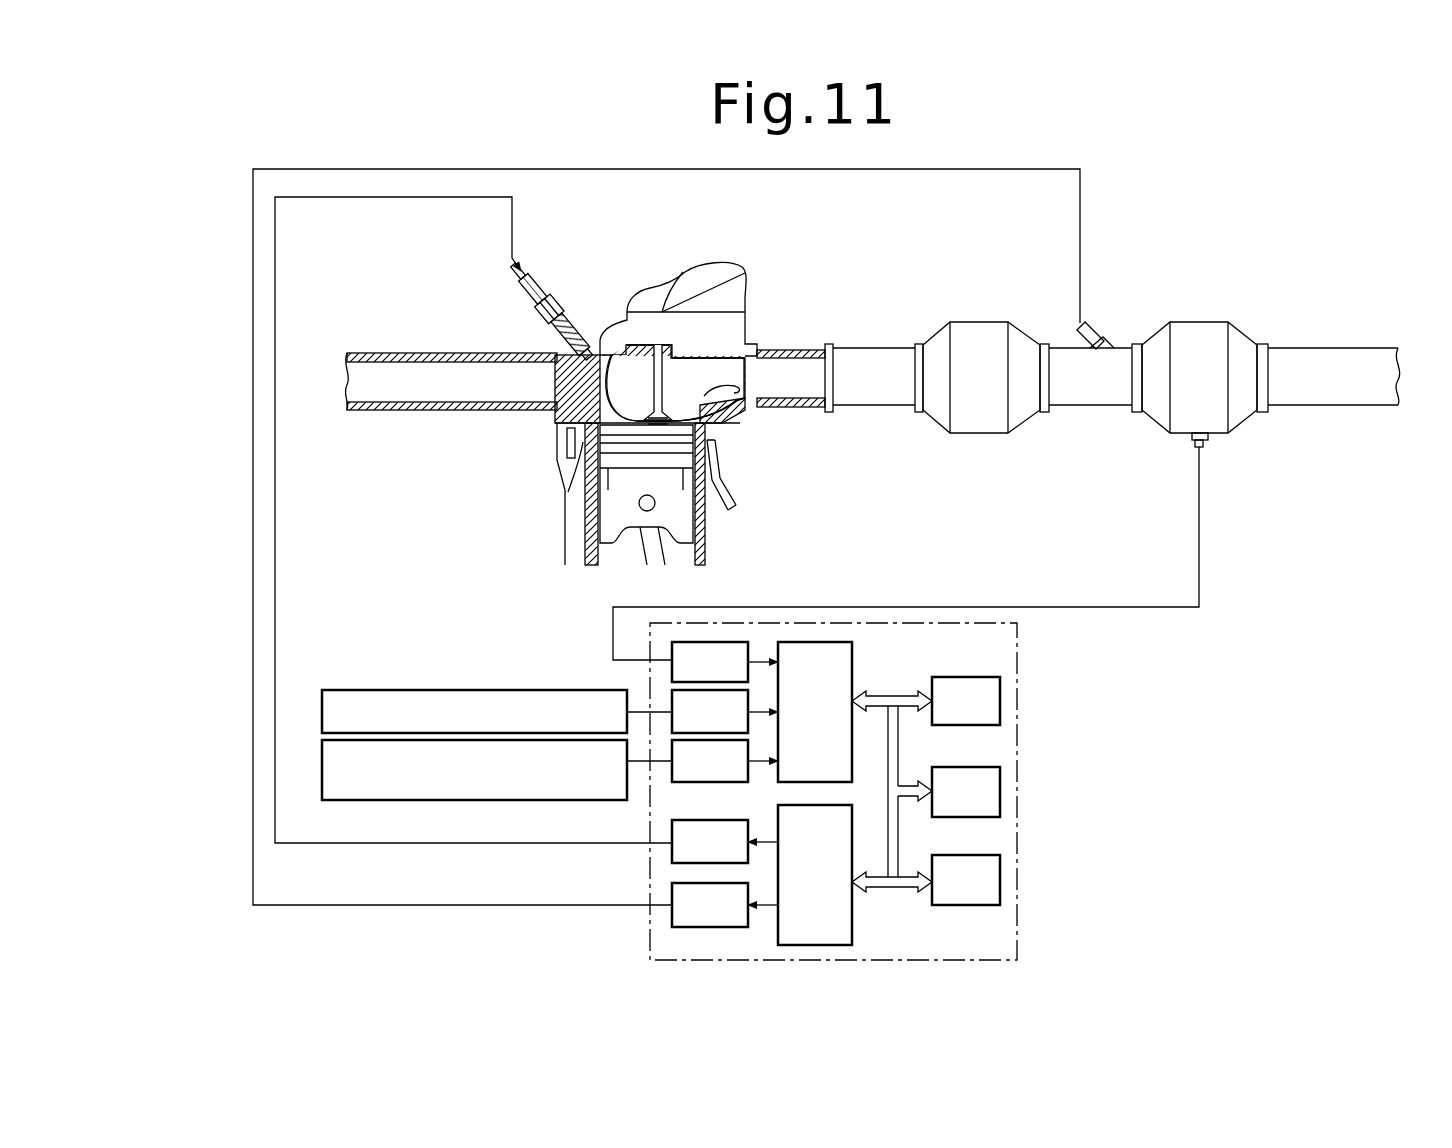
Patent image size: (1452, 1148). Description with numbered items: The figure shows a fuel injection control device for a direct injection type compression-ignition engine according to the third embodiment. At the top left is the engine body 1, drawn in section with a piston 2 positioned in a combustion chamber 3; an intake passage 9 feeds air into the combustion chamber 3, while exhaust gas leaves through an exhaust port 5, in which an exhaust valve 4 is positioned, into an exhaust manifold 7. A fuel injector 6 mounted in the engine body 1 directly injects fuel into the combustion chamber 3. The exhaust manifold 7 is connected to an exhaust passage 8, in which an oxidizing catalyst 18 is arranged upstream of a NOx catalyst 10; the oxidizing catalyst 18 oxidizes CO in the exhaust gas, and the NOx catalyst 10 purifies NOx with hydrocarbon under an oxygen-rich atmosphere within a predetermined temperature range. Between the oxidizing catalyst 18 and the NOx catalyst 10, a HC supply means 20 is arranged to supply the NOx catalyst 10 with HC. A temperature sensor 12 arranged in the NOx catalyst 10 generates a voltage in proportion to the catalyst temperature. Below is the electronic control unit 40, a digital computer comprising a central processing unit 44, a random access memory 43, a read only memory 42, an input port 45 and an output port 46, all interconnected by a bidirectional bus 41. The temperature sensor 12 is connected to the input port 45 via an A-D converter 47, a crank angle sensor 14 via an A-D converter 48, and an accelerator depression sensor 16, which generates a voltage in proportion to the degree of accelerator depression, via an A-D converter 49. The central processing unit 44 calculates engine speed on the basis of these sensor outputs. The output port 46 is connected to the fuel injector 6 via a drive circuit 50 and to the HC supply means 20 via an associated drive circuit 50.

The engine body 1 is at (703, 256).
The piston 2 is at (620, 523).
The combustion chamber 3 is at (590, 472).
The exhaust valve 4 is at (741, 283).
The exhaust port 5 is at (738, 412).
The fuel injector 6 is at (555, 300).
The exhaust manifold 7 is at (790, 350).
The exhaust passage 8 is at (875, 348).
The intake passage 9 is at (455, 410).
The NOx catalyst 10 is at (1208, 322).
The temperature sensor 12 is at (1208, 441).
The crank angle sensor 14 is at (490, 690).
The accelerator depression sensor 16 is at (482, 800).
The oxidizing catalyst 18 is at (990, 322).
The HC supply means 20 is at (1095, 322).
The electronic control unit 40 is at (1022, 677).
The bidirectional bus 41 is at (895, 700).
The read only memory 42 is at (972, 677).
The random access memory 43 is at (963, 767).
The central processing unit 44 is at (963, 855).
The input port 45 is at (852, 672).
The output port 46 is at (852, 930).
The A-D converter 47 is at (722, 642).
The A-D converter 48 is at (672, 702).
The A-D converter 49 is at (710, 782).
The drive circuit 50 is at (672, 834).